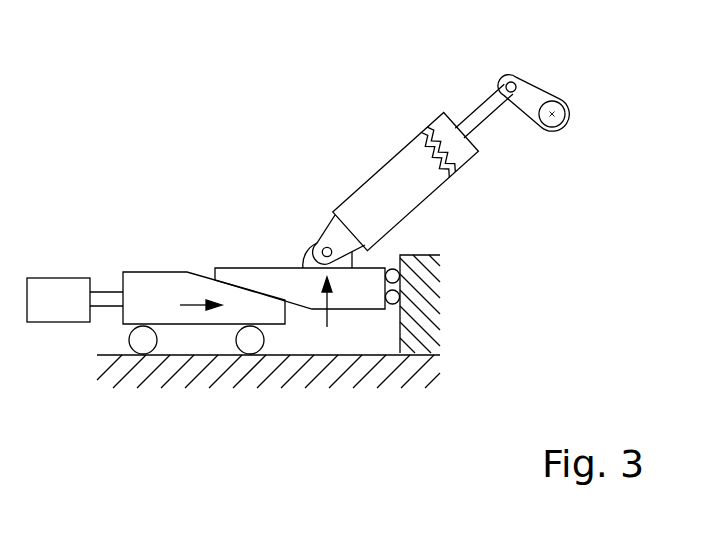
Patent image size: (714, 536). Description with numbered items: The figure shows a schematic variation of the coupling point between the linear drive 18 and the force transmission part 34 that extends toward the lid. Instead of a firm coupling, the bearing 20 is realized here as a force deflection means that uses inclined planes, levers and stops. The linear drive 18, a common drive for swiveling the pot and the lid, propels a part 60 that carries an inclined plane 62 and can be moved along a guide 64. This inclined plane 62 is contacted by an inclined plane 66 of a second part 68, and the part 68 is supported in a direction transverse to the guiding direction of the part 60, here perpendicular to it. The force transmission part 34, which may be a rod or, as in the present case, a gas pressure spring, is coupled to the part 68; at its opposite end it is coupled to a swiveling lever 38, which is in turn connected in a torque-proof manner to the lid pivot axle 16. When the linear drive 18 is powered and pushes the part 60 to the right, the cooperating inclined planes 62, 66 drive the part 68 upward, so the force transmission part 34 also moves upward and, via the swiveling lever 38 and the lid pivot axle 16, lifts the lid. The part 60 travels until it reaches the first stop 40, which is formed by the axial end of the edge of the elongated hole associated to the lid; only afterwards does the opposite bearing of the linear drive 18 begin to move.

The lid pivot axle 16 is at (553, 131).
The linear drive 18 is at (57, 285).
The bearing 20 is at (210, 160).
The force transmission part 34 is at (392, 175).
The swiveling lever 38 is at (532, 95).
The first stop 40 is at (401, 326).
The part 60 is at (145, 285).
The inclined plane 62 is at (205, 272).
The guide 64 is at (175, 358).
The inclined plane 66 is at (300, 309).
The second part 68 is at (347, 295).